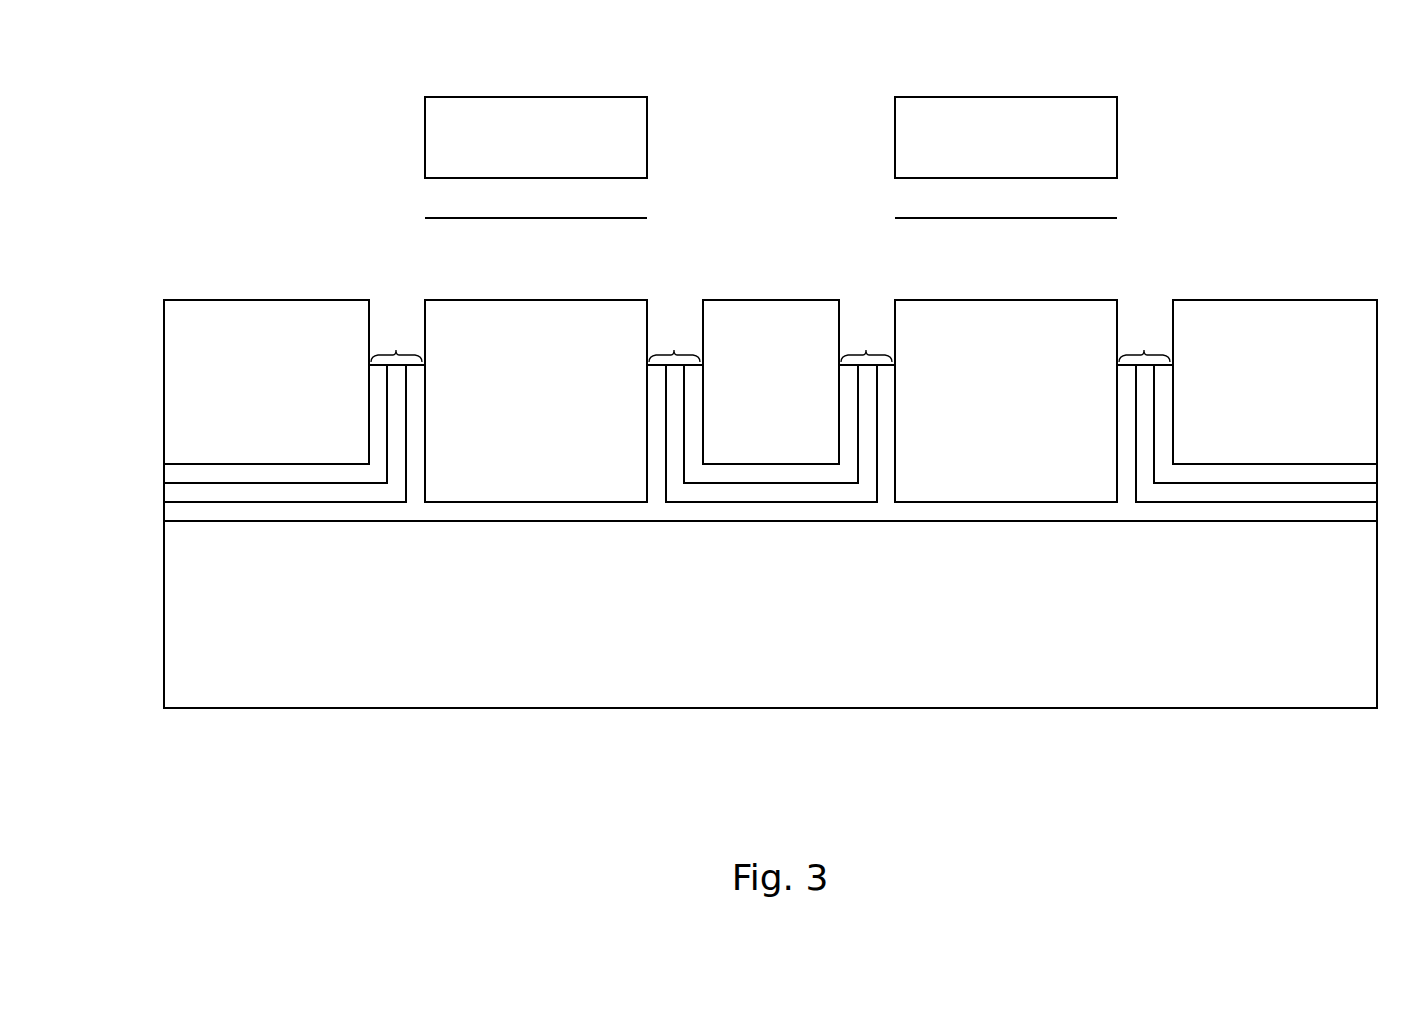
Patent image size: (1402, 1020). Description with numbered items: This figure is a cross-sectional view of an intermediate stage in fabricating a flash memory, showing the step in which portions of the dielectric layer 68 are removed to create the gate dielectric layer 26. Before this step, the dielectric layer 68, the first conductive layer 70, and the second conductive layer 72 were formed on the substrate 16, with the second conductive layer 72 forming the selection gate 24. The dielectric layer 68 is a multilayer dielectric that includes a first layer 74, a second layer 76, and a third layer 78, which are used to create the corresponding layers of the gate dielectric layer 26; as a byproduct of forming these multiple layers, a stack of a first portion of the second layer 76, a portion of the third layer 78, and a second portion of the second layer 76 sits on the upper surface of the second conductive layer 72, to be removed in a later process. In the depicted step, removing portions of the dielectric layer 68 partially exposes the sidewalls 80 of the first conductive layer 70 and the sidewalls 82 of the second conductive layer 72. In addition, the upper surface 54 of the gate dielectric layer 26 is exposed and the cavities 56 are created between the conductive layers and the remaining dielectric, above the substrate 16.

The substrate 16 is at (172, 616).
The selection gate 24 is at (554, 310).
The second conductive layer 72 is at (771, 401).
The gate dielectric layer 26 is at (772, 341).
The dielectric layer 68 is at (770, 341).
The upper surface 54 is at (415, 352).
The cavities 56 is at (396, 294).
The first conductive layer 70 is at (261, 308).
The first layer 74 is at (218, 470).
The second layer 76 is at (545, 105).
The third layer 78 is at (641, 188).
The sidewalls 80 is at (361, 301).
The sidewalls 82 is at (432, 301).